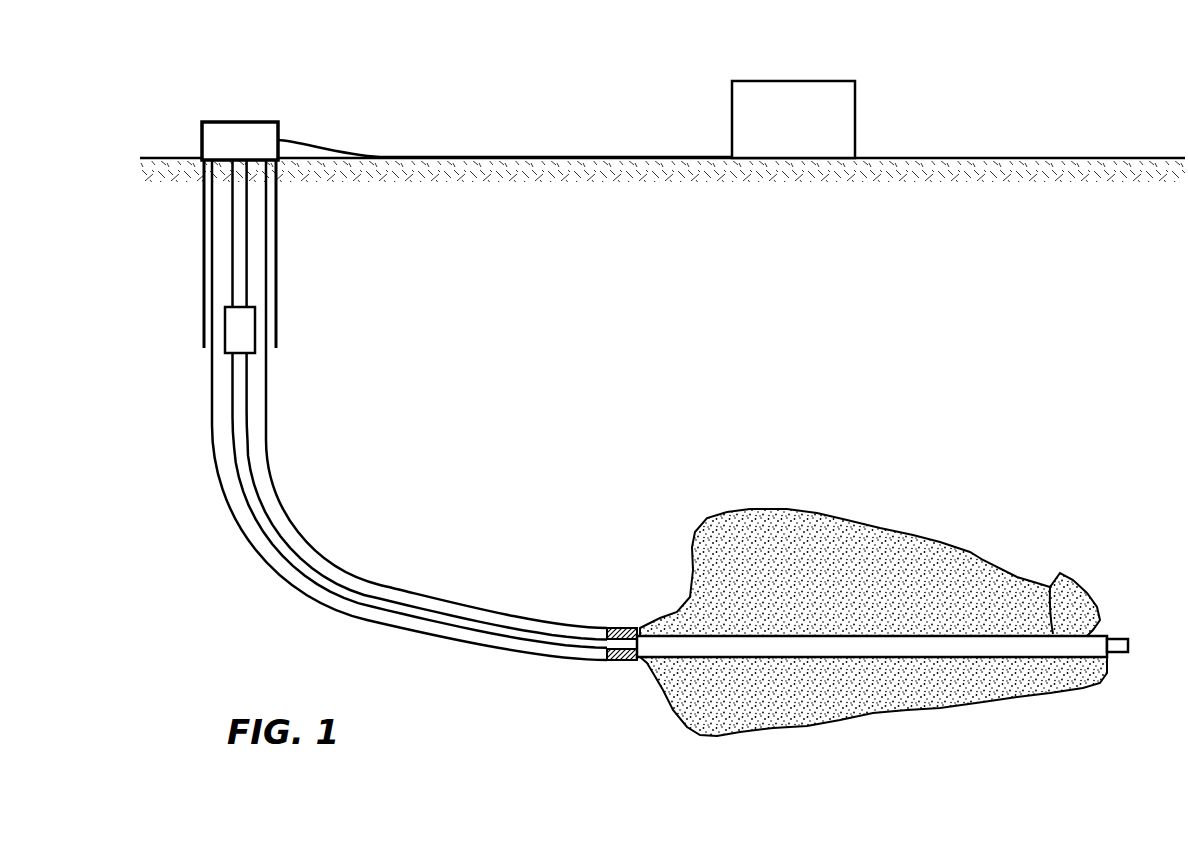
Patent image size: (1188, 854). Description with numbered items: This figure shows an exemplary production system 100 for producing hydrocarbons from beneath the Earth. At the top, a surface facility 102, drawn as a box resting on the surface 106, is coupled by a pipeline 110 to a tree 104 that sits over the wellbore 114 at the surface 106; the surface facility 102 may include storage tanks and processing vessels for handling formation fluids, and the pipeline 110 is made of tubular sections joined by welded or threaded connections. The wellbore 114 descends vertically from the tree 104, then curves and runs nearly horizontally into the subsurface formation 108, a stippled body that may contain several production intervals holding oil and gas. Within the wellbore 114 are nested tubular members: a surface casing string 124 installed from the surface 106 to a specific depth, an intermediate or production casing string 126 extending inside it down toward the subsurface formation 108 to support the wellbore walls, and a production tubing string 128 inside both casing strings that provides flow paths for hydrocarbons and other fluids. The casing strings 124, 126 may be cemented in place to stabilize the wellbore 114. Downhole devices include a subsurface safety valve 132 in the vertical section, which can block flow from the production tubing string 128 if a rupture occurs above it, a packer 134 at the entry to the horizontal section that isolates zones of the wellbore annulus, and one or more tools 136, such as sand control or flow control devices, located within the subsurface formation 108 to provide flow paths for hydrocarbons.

The production system 100 is at (522, 60).
The surface facility 102 is at (819, 80).
The tree 104 is at (228, 121).
The surface 106 is at (1077, 157).
The subsurface formation 108 is at (800, 512).
The pipeline 110 is at (292, 143).
The wellbore 114 is at (225, 415).
The surface casing string 124 is at (279, 237).
The production casing string 126 is at (270, 405).
The production tubing string 128 is at (251, 507).
The subsurface safety valve 132 is at (256, 326).
The packer 134 is at (620, 603).
The tools 136 is at (1060, 585).